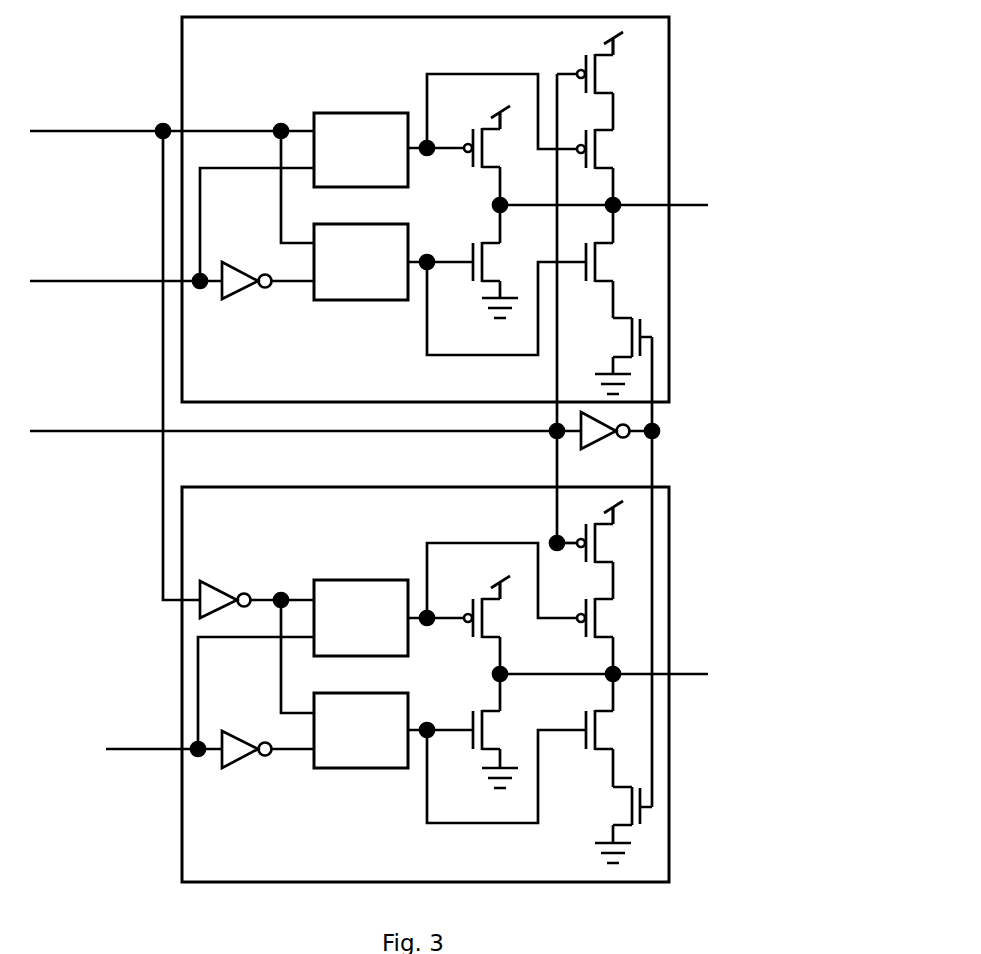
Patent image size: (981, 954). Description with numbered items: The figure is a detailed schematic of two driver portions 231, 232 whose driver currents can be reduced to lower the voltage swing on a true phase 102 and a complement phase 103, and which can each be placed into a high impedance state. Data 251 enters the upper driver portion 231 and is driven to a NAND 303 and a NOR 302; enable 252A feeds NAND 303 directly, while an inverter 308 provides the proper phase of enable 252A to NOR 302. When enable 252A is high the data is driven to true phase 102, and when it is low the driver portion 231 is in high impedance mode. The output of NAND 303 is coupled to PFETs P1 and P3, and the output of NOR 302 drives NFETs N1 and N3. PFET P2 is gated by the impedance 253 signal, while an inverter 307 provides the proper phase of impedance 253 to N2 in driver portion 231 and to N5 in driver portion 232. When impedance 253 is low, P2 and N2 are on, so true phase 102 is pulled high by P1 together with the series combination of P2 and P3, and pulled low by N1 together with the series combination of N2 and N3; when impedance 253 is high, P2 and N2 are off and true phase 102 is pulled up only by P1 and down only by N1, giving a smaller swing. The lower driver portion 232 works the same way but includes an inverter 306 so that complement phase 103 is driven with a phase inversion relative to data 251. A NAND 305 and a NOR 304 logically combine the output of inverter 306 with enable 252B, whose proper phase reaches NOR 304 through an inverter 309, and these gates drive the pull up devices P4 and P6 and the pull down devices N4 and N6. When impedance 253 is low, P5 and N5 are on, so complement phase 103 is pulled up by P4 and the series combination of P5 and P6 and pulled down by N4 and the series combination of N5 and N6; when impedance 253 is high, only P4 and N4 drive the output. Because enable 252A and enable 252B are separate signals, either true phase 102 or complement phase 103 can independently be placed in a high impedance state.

The true phase 102 is at (684, 203).
The complement phase 103 is at (688, 672).
The driver portion 231 is at (509, 287).
The driver portion 232 is at (520, 685).
The data 251 is at (172, 334).
The enable 252A is at (172, 228).
The enable 252B is at (185, 696).
The impedance 253 is at (304, 403).
The NOR 302 is at (361, 262).
The NAND 303 is at (361, 150).
The NOR 304 is at (361, 730).
The NAND 305 is at (361, 618).
The inverter 306 is at (220, 582).
The inverter 307 is at (603, 447).
The inverter 308 is at (248, 337).
The inverter 309 is at (224, 768).
The PFET P1 is at (494, 155).
The PFET P2 is at (608, 81).
The PFET P3 is at (608, 167).
The pull up device P4 is at (494, 625).
The PFET P5 is at (606, 550).
The pull up device P6 is at (608, 636).
The NFET N1 is at (500, 261).
The NFET N2 is at (620, 356).
The NFET N3 is at (614, 261).
The pull down device N4 is at (500, 731).
The NFET N5 is at (620, 825).
The pull down device N6 is at (614, 730).